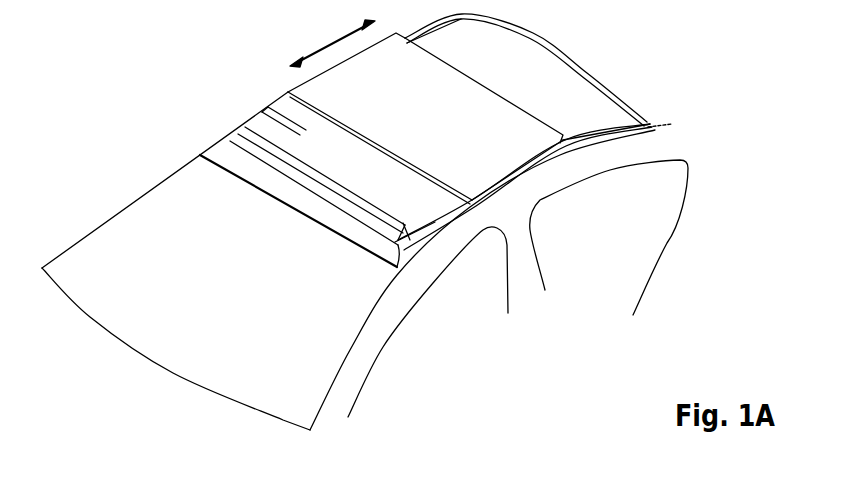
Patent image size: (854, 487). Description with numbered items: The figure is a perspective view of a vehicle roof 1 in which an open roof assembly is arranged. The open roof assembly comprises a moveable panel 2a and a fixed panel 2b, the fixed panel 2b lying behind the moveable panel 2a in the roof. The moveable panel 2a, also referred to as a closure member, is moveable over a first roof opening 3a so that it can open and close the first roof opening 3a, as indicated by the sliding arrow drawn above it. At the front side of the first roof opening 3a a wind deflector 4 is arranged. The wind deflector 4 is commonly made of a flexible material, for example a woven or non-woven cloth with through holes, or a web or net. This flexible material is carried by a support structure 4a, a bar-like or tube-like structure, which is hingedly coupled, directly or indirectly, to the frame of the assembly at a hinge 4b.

The vehicle roof 1 is at (637, 155).
The moveable panel 2a is at (437, 113).
The fixed panel 2b is at (545, 85).
The first roof opening 3a is at (301, 141).
The wind deflector 4 is at (258, 153).
The support structure 4a is at (377, 210).
The hinge 4b is at (258, 108).